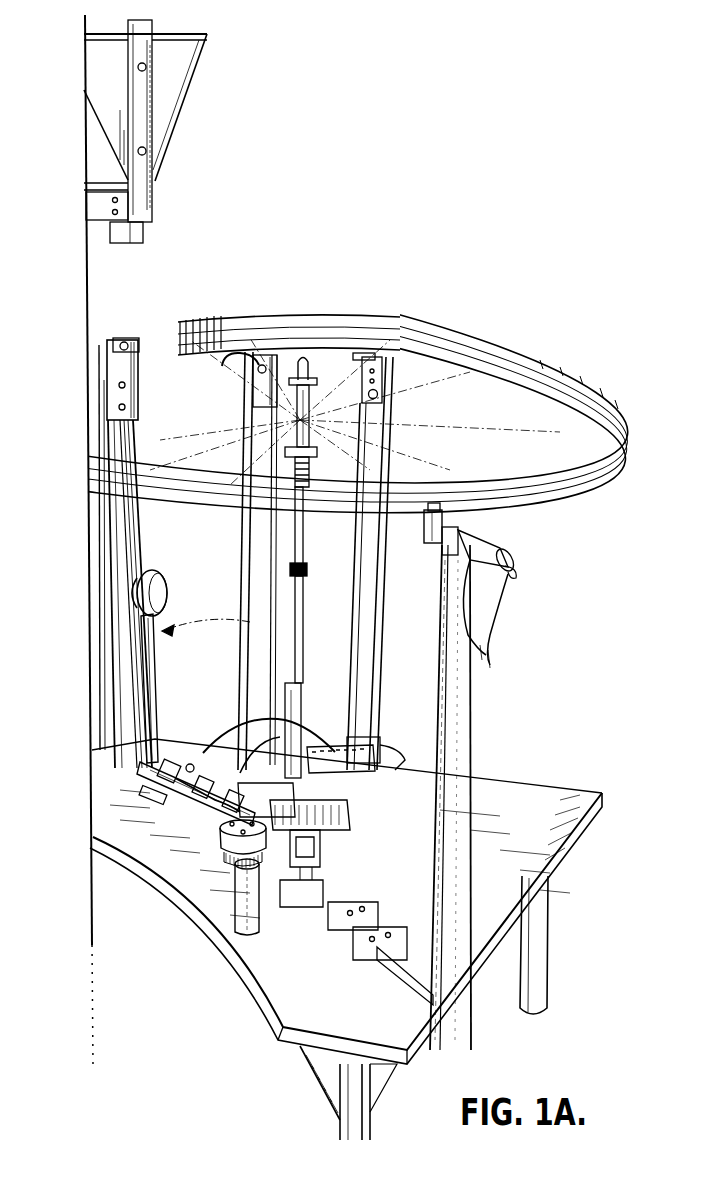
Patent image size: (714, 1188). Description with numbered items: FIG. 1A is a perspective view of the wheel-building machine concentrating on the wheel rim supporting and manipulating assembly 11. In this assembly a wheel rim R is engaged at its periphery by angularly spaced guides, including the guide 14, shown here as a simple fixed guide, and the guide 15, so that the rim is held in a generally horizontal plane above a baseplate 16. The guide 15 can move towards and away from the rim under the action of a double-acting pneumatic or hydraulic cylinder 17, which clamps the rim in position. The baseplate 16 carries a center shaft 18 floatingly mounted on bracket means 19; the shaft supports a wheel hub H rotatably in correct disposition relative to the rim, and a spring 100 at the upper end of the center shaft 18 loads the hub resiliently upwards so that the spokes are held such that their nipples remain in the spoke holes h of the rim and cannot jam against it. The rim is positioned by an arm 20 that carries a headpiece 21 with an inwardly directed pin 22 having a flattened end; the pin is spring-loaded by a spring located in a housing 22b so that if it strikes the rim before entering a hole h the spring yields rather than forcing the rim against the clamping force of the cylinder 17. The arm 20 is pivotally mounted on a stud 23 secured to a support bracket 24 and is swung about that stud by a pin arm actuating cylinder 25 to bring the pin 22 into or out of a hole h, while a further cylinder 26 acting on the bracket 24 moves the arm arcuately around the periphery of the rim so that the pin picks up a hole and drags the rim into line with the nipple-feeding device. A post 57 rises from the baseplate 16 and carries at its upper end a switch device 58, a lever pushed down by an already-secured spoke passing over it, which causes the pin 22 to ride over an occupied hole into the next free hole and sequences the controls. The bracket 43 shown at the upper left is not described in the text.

The mounting bracket 43 is at (174, 95).
The wheel rim R is at (462, 347).
The hole h is at (488, 358).
The wheel hub H is at (313, 410).
The headpiece 21 is at (138, 368).
The pin 22 is at (138, 345).
The housing 22b is at (123, 344).
The arm 20 is at (134, 542).
The stud 23 is at (110, 594).
The support bracket 24 is at (153, 665).
The post 57 is at (262, 577).
The switch device 58 is at (225, 364).
The guide 14 is at (370, 355).
The spring 100 is at (285, 468).
The center shaft 18 is at (300, 647).
The cylinder 26 is at (308, 762).
The wheel rim supporting and manipulating assembly 11 is at (226, 986).
The baseplate 16 is at (400, 1034).
The guide 15 is at (441, 508).
The cylinder 17 is at (500, 547).
The pin arm actuating cylinder 25 is at (203, 807).
The bracket means 19 is at (350, 818).